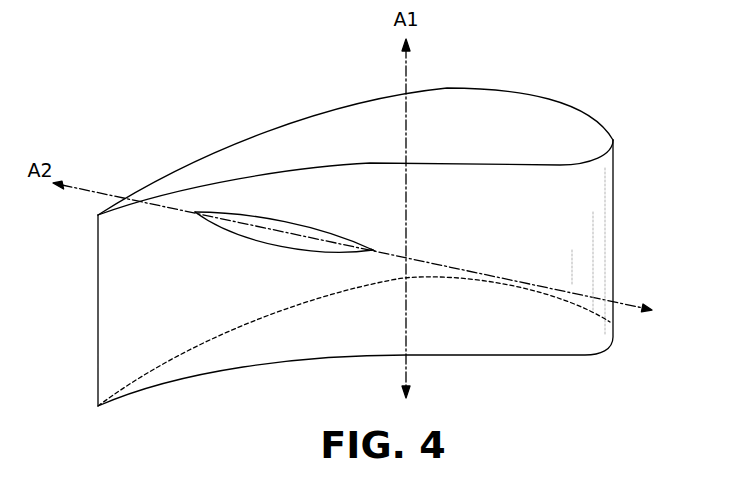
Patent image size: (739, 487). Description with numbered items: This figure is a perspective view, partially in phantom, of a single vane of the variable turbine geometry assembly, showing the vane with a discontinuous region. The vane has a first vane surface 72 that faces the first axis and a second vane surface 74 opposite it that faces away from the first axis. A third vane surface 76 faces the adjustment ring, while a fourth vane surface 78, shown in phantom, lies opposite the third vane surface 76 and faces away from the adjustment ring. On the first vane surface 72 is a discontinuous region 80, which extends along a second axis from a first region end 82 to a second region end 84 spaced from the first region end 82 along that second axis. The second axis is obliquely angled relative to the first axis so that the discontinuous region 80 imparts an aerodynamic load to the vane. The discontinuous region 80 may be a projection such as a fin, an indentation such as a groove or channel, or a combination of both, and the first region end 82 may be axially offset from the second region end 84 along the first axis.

The first vane surface 72 is at (427, 232).
The second vane surface 74 is at (208, 148).
The third vane surface 76 is at (492, 118).
The fourth vane surface 78 is at (503, 332).
The discontinuous region 80 is at (270, 230).
The first region end 82 is at (195, 212).
The second region end 84 is at (373, 250).